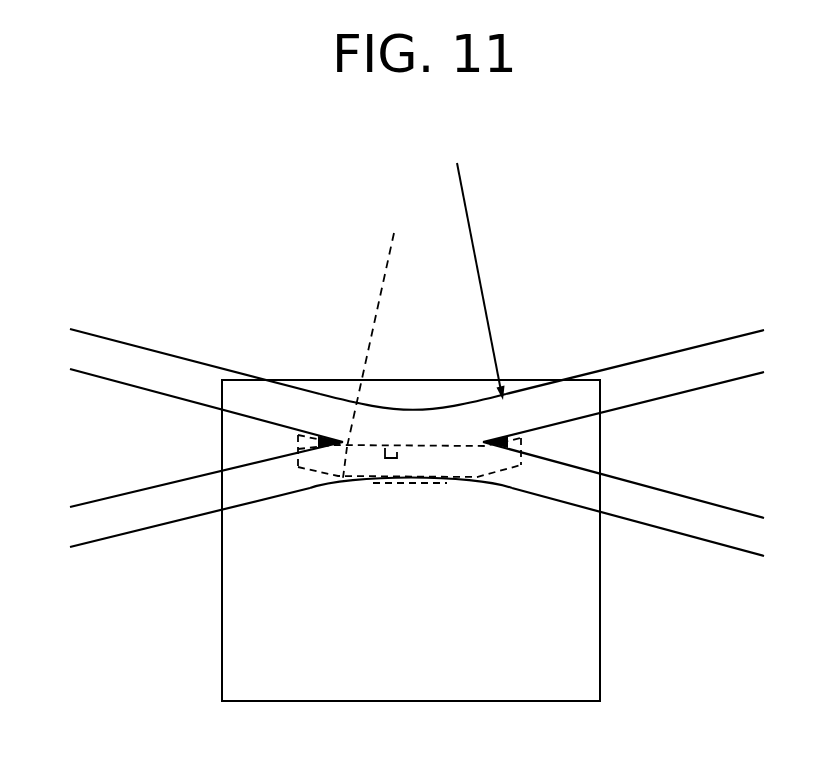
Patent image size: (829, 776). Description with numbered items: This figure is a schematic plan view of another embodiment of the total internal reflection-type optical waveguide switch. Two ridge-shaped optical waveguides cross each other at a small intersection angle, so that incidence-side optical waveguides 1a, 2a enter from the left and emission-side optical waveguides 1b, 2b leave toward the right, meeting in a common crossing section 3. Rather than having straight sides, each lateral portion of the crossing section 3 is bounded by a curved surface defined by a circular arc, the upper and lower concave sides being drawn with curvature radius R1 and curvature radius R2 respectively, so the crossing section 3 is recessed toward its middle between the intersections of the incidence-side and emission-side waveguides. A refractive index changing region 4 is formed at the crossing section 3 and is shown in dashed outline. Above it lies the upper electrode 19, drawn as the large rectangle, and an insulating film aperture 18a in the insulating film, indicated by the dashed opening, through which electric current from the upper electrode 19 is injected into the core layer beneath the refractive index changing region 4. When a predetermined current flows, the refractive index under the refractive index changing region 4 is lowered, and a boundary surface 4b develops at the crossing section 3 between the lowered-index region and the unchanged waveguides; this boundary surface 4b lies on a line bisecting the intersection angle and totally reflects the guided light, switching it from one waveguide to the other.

The incidence-side optical waveguide 1a is at (140, 518).
The emission-side optical waveguide 1b is at (710, 365).
The incidence-side optical waveguide 2a is at (146, 355).
The emission-side optical waveguide 2b is at (675, 523).
The crossing section 3 is at (447, 430).
The refractive index changing region 4 is at (343, 478).
The boundary surface 4b is at (402, 450).
The insulating film aperture 18a is at (521, 460).
The upper electrode 19 is at (583, 637).
The curvature radius R1 is at (369, 340).
The curvature radius R2 is at (490, 281).